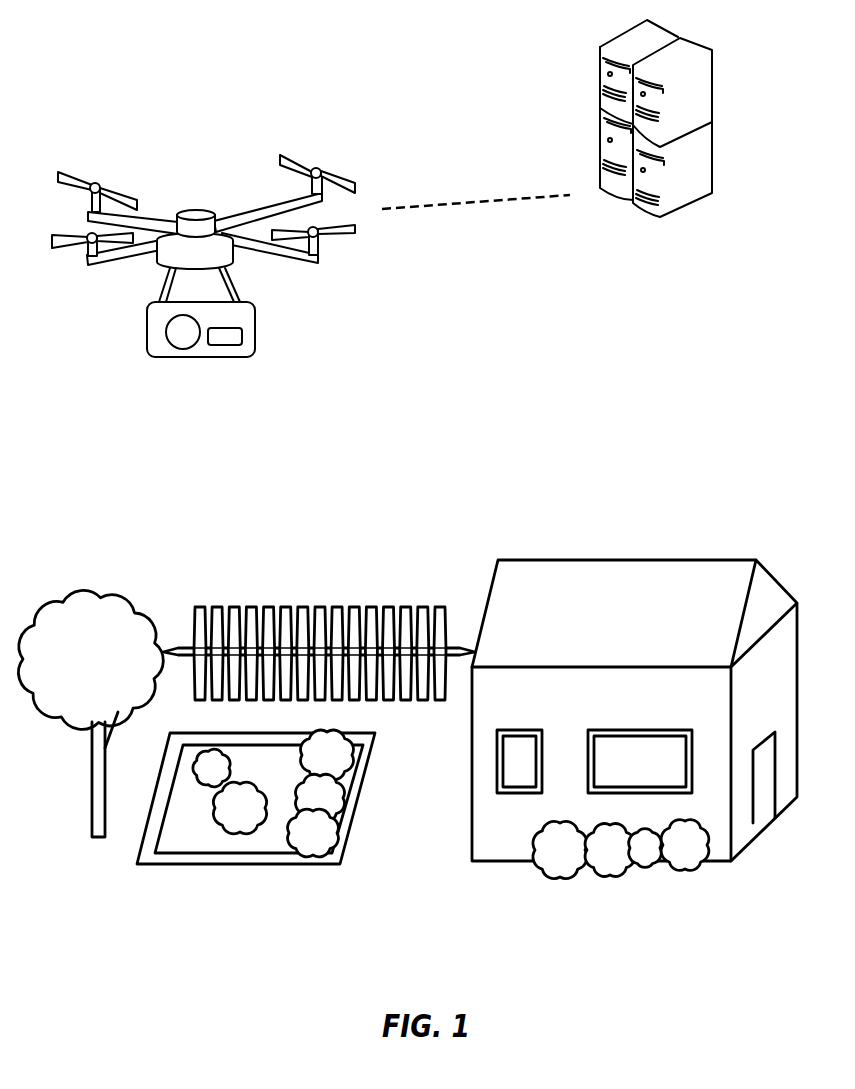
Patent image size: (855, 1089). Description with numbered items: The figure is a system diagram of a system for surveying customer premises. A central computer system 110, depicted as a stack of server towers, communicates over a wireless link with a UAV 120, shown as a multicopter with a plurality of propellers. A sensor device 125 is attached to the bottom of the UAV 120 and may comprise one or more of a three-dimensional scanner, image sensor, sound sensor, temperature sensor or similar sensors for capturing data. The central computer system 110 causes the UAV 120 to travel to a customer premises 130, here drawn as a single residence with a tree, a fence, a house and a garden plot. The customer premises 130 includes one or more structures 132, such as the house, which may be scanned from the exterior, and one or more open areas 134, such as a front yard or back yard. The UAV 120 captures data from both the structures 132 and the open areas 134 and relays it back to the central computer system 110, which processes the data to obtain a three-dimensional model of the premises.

The central computer system 110 is at (656, 162).
The UAV 120 is at (199, 210).
The sensor device 125 is at (257, 343).
The customer premises 130 is at (402, 560).
The structures 132 is at (743, 558).
The open areas 134 is at (393, 843).